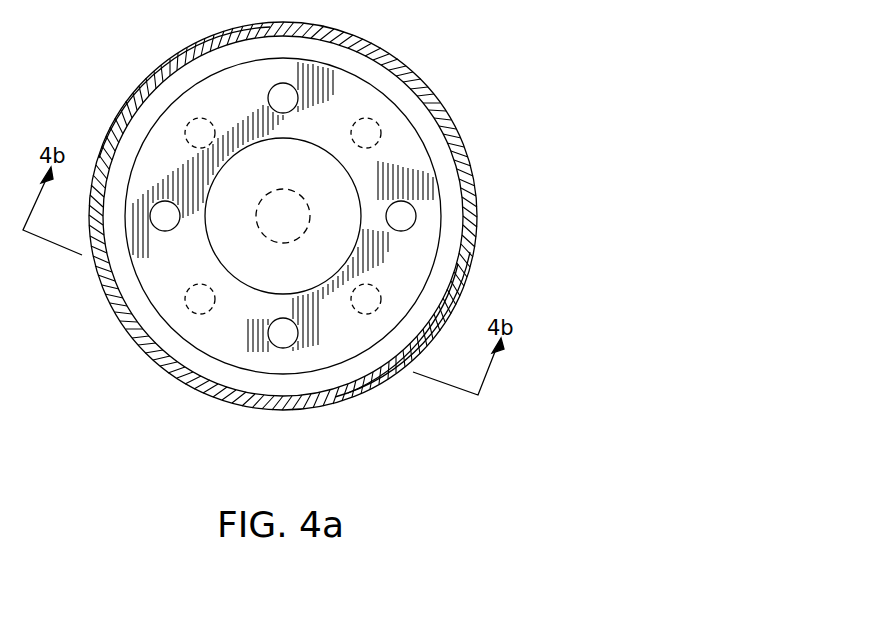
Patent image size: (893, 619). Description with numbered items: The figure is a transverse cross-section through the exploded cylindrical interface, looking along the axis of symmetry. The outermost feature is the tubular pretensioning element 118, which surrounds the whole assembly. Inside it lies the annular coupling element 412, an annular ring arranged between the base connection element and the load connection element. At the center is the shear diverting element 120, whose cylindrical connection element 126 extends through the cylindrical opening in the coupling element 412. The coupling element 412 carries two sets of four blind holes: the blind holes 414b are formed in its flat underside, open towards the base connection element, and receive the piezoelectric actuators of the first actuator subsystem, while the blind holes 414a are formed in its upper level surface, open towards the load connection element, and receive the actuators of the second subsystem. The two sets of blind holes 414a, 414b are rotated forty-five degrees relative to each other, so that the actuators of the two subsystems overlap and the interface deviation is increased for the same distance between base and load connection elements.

The tubular pretensioning element 118 is at (478, 208).
The annular coupling element 412 is at (420, 259).
The shear diverting element 120 is at (270, 275).
The cylindrical connection element 126 is at (303, 196).
The blind holes 414a is at (187, 293).
The blind holes 414b is at (277, 348).